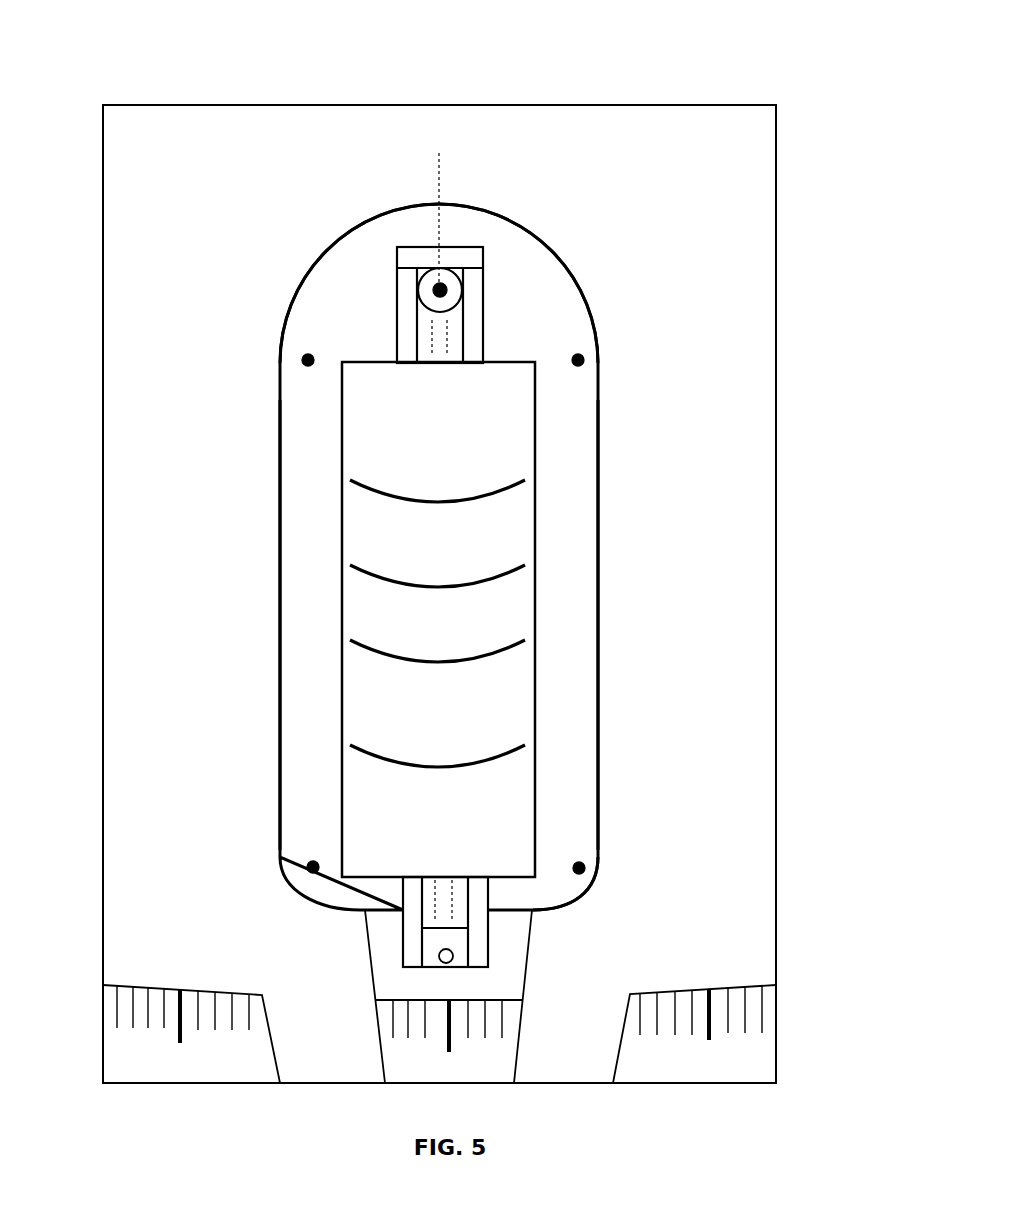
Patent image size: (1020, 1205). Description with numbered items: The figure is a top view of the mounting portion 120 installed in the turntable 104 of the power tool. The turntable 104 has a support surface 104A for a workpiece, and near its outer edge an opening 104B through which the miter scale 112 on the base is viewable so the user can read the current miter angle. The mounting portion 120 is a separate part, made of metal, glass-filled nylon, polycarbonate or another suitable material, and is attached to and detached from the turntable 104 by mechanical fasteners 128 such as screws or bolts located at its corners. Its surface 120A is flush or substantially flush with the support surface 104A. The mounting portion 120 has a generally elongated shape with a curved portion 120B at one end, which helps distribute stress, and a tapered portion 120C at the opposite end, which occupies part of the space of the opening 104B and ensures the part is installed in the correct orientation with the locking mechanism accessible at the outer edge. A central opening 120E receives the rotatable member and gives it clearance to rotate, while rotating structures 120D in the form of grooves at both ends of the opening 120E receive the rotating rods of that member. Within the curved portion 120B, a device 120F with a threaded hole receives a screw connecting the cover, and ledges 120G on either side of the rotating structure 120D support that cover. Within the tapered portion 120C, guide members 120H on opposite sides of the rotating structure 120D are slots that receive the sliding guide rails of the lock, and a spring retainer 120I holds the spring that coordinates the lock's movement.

The turntable 104 is at (123, 76).
The support surface 104A is at (190, 595).
The opening 104B is at (517, 1053).
The miter scale 112 is at (438, 1050).
The mounting portion 120 is at (540, 219).
The surface 120A is at (332, 517).
The curved portion 120B is at (246, 220).
The tapered portion 120C is at (622, 835).
The rotating structures 120D is at (443, 330).
The opening 120E is at (438, 619).
The device 120F is at (418, 213).
The ledges 120G is at (408, 290).
The guide members 120H is at (418, 890).
The spring retainer 120I is at (455, 957).
The mechanical fasteners 128 is at (300, 365).